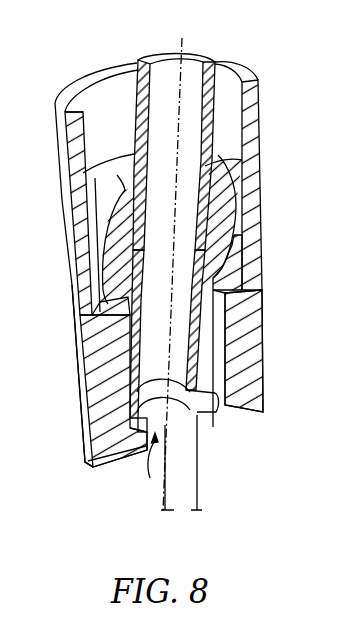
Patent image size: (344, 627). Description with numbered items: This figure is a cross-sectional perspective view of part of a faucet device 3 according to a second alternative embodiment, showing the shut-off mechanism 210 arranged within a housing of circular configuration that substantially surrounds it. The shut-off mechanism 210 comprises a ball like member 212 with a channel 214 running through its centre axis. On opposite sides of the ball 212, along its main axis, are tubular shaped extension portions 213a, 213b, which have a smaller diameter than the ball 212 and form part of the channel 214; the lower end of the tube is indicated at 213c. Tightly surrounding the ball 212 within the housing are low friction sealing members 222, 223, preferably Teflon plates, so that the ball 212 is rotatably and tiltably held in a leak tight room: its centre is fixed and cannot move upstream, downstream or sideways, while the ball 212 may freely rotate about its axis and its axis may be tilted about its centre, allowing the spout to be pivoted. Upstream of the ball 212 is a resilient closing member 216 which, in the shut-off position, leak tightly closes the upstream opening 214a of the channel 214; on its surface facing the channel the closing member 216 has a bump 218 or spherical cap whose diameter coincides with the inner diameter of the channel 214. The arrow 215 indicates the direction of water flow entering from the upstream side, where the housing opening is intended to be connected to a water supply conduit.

The shut-off mechanism 210 is at (206, 380).
The ball like member 212 is at (100, 247).
The tubular shaped extension portion 213a is at (228, 43).
The tubular shaped extension portion 213b is at (130, 386).
The lower tube end 213c is at (199, 424).
The channel 214 is at (168, 72).
The upstream opening 214a is at (147, 350).
The flow direction arrow 215 is at (141, 464).
The resilient closing member 216 is at (197, 480).
The bump 218 is at (93, 431).
The low friction sealing member 222 is at (232, 172).
The low friction sealing member 223 is at (226, 277).
The faucet device 3 is at (102, 489).